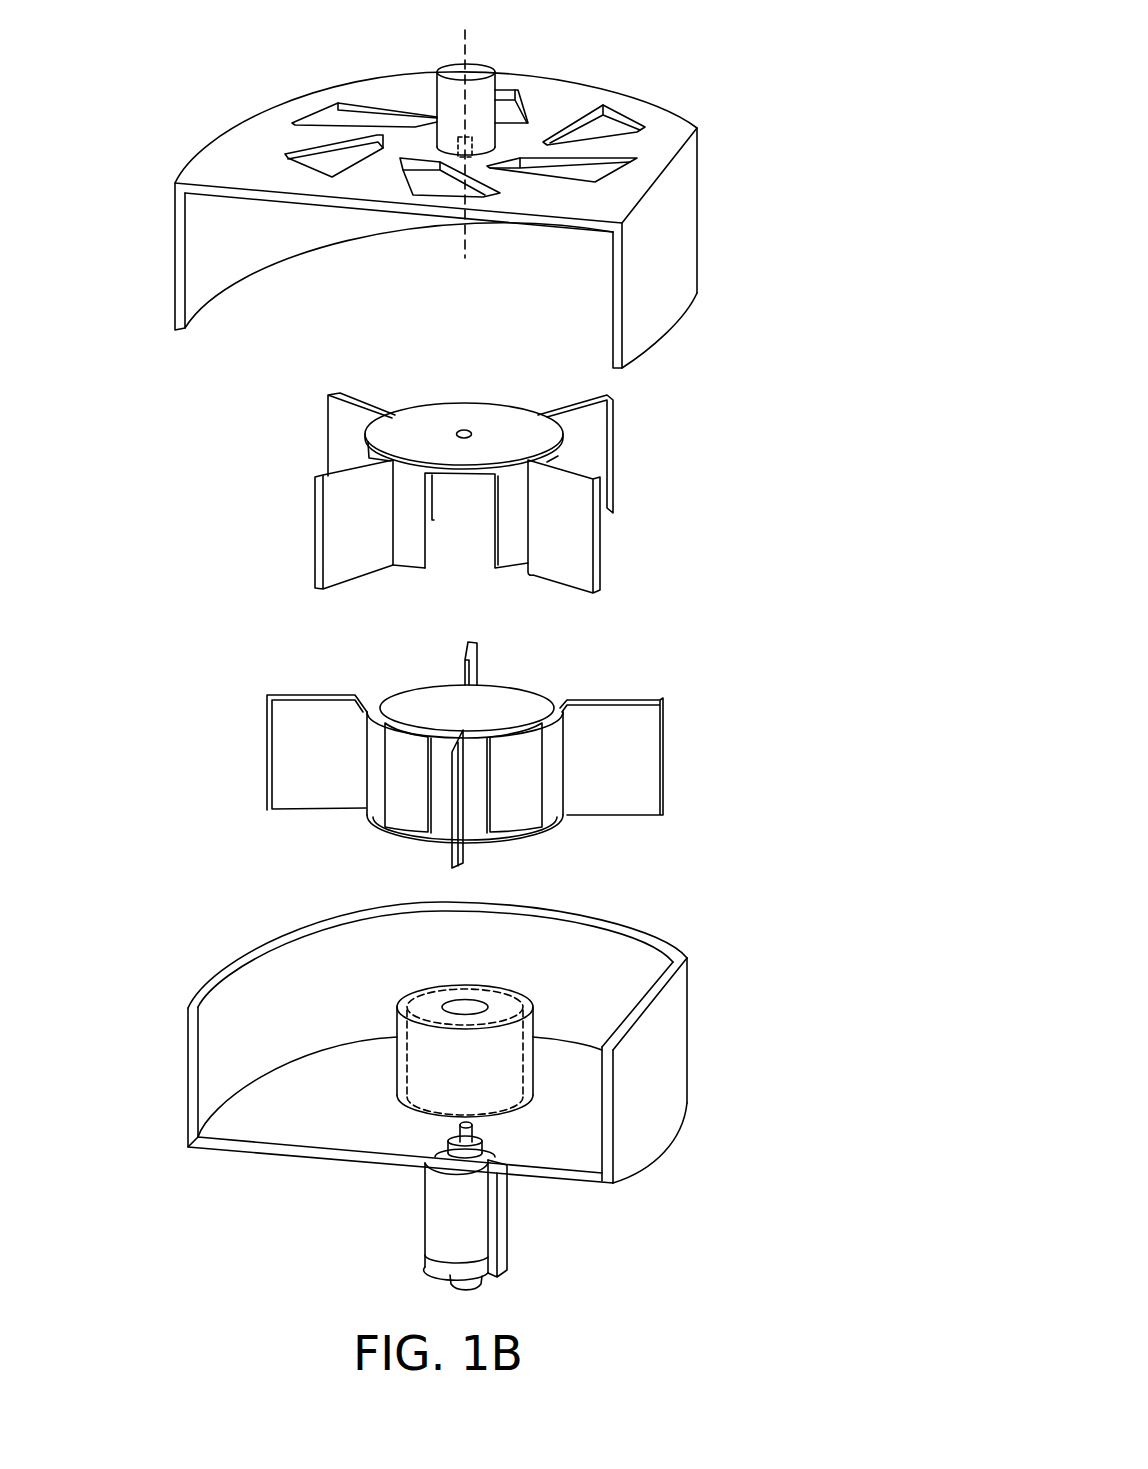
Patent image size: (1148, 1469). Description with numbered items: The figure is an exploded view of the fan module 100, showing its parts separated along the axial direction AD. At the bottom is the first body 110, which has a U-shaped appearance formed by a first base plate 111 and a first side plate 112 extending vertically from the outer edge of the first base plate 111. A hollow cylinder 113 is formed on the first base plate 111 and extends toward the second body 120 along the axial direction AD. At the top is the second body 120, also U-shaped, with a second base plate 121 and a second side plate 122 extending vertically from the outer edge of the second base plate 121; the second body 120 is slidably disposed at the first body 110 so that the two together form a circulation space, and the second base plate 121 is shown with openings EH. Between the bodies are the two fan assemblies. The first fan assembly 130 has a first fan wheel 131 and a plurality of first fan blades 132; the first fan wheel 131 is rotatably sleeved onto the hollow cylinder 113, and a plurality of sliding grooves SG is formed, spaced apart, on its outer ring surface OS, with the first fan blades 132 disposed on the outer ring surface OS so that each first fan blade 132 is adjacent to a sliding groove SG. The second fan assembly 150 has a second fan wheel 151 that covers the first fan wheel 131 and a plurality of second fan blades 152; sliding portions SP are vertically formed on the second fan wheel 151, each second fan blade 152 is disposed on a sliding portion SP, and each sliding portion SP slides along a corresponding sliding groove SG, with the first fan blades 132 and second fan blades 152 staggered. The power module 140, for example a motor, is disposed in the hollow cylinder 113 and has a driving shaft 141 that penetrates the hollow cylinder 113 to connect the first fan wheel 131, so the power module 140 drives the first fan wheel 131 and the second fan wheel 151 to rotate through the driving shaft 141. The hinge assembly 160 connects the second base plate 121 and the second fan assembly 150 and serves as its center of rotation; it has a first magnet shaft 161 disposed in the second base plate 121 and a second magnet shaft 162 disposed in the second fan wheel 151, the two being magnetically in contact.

The fan module 100 is at (808, 1307).
The first body 110 is at (352, 1219).
The first base plate 111 is at (307, 1103).
The first side plate 112 is at (228, 1078).
The hollow cylinder 113 is at (393, 1090).
The second body 120 is at (773, 117).
The second base plate 121 is at (670, 150).
The second side plate 122 is at (680, 200).
The first fan assembly 130 is at (730, 652).
The first fan wheel 131 is at (515, 707).
The first fan blades 132 is at (650, 722).
The power module 140 is at (437, 1218).
The driving shaft 141 is at (472, 1128).
The second fan assembly 150 is at (238, 460).
The second fan wheel 151 is at (380, 438).
The second fan blades 152 is at (332, 507).
The hinge assembly 160 is at (550, 287).
The first magnet shaft 161 is at (467, 158).
The second magnet shaft 162 is at (464, 430).
The axial direction AD is at (465, 129).
The exhaust hole EH is at (623, 118).
The sliding portions SP is at (408, 527).
The outer ring surface OS is at (365, 765).
The sliding grooves SG is at (517, 785).